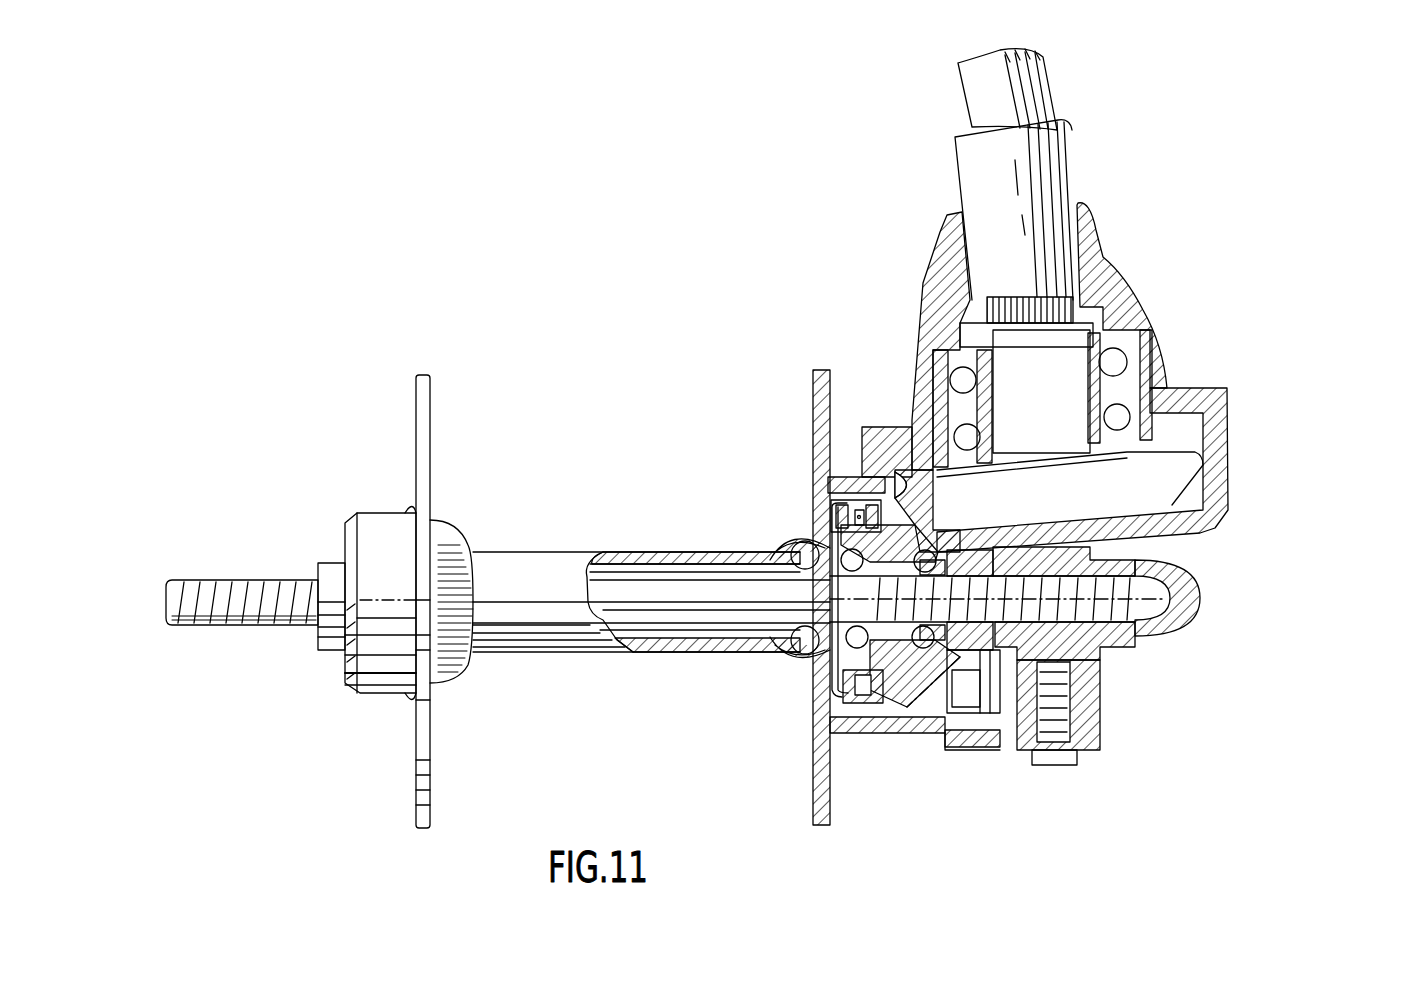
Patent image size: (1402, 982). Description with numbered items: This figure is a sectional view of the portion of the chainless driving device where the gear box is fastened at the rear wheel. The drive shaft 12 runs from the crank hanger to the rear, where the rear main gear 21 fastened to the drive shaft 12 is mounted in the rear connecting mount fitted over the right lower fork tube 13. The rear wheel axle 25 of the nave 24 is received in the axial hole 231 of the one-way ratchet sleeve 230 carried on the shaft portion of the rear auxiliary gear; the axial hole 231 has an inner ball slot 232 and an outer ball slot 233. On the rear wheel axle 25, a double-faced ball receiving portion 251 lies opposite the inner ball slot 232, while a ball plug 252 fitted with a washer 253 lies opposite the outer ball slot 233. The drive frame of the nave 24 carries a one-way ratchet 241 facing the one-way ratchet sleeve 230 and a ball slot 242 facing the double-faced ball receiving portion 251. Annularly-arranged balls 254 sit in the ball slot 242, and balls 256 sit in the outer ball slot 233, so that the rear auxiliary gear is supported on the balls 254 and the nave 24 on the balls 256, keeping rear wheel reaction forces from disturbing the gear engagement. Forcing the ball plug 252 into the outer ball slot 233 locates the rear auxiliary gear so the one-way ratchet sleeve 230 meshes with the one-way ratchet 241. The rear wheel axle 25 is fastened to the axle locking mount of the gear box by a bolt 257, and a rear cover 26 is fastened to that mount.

The drive shaft 12 is at (1022, 110).
The right lower fork tube 13 is at (1055, 183).
The rear main gear 21 is at (1195, 483).
The nave 24 is at (543, 556).
The rear wheel axle 25 is at (652, 605).
The rear cover 26 is at (1092, 742).
The one-way ratchet sleeve 230 is at (872, 735).
The axial hole 231 is at (928, 703).
The inner ball slot 232 is at (852, 500).
The outer ball slot 233 is at (948, 745).
The one-way ratchet 241 is at (823, 775).
The ball slot 242 is at (830, 680).
The double-faced ball receiving portion 251 is at (798, 652).
The ball plug 252 is at (975, 742).
The washer 253 is at (1020, 752).
The balls 254 is at (800, 543).
The balls 256 is at (907, 498).
The bolt 257 is at (1140, 645).